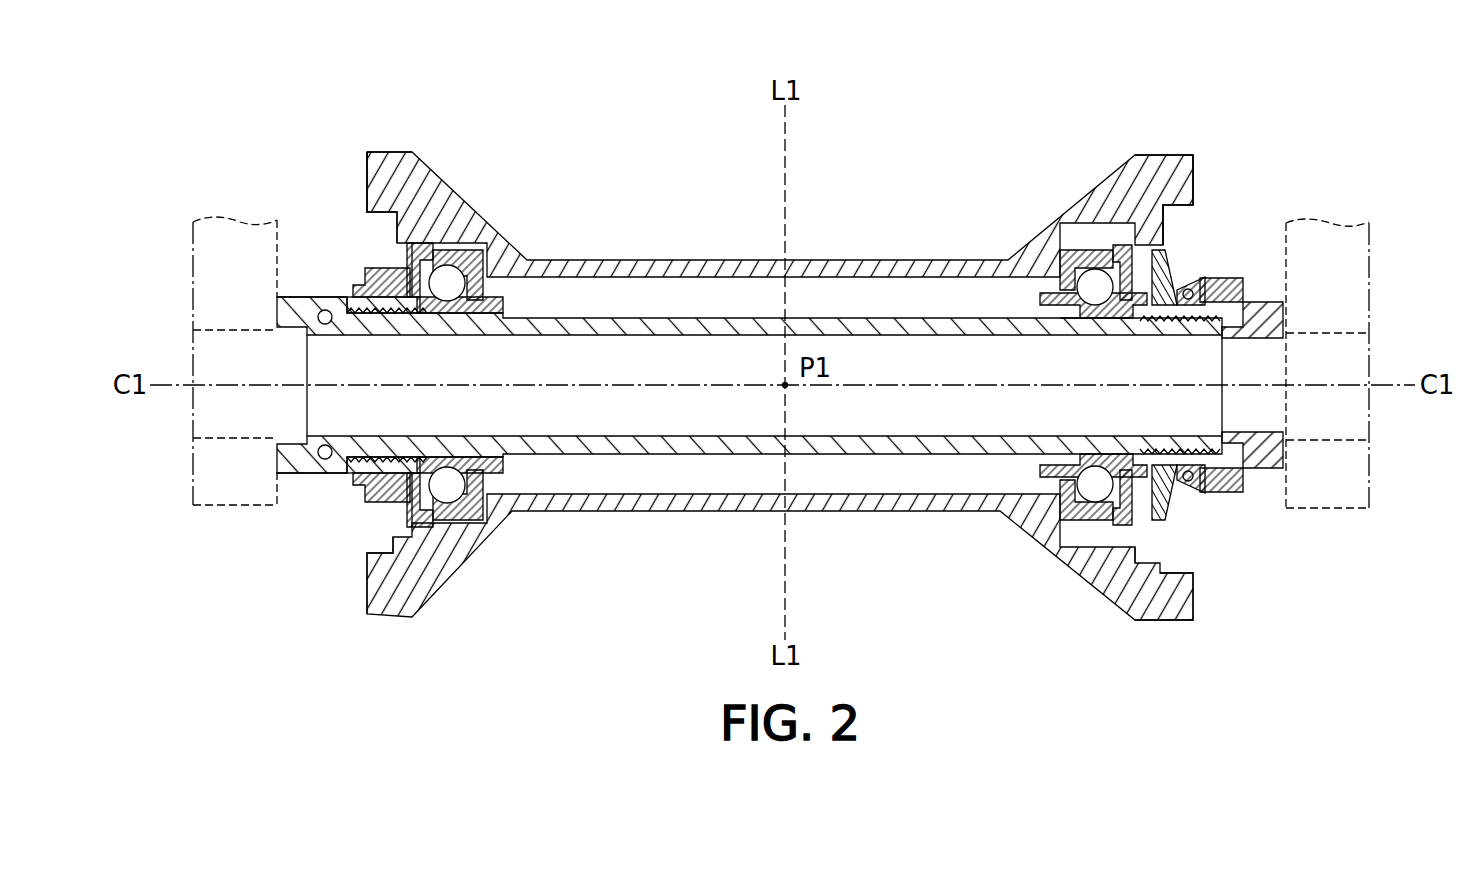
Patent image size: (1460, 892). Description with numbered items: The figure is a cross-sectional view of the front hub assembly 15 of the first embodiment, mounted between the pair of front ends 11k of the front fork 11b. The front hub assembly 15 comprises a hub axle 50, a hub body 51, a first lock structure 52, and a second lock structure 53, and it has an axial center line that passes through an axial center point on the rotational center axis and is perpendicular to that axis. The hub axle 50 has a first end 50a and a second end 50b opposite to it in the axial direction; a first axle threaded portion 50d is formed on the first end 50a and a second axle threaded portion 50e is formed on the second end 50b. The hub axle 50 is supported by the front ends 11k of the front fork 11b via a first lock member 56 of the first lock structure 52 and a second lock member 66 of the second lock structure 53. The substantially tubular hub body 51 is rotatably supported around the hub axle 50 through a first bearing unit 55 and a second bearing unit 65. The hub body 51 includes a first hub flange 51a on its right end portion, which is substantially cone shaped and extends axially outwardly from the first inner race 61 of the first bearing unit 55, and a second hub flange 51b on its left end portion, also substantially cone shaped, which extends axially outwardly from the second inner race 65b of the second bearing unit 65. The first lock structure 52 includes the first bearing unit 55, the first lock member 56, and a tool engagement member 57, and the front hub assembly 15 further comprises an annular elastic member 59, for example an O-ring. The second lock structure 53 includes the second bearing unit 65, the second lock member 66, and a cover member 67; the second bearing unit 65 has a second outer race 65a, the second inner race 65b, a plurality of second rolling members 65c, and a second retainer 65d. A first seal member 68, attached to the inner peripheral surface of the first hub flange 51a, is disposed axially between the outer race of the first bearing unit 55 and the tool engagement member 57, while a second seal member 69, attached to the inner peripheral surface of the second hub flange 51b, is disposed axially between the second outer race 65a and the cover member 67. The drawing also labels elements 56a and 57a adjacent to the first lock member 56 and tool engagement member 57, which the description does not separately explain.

The front fork 11b is at (185, 245).
The front end 11k is at (207, 284).
The front hub assembly 15 is at (1230, 76).
The hub axle 50 is at (760, 440).
The first end 50a is at (1153, 440).
The second end 50b is at (380, 449).
The first axle threaded portion 50d is at (1247, 490).
The second axle threaded portion 50e is at (357, 482).
The hub body 51 is at (737, 347).
The first hub flange 51a is at (1163, 152).
The second hub flange 51b is at (390, 150).
The first lock structure 52 is at (1293, 135).
The second lock structure 53 is at (313, 188).
The first bearing unit 55 is at (1056, 254).
The first lock member 56 is at (1297, 322).
The seal member of end cap 56a is at (1260, 296).
The tool engagement member 57 is at (1197, 245).
The washer of lock nut 57a is at (1217, 276).
The elastic member 59 is at (1180, 492).
The first inner race 61 is at (1093, 323).
The second bearing unit 65 is at (461, 413).
The second outer race 65a is at (455, 465).
The second inner race 65b is at (387, 505).
The second rolling members 65c is at (450, 504).
The second retainer 65d is at (500, 460).
The second lock member 66 is at (291, 292).
The cover member 67 is at (358, 265).
The first seal member 68 is at (1120, 245).
The second seal member 69 is at (427, 240).